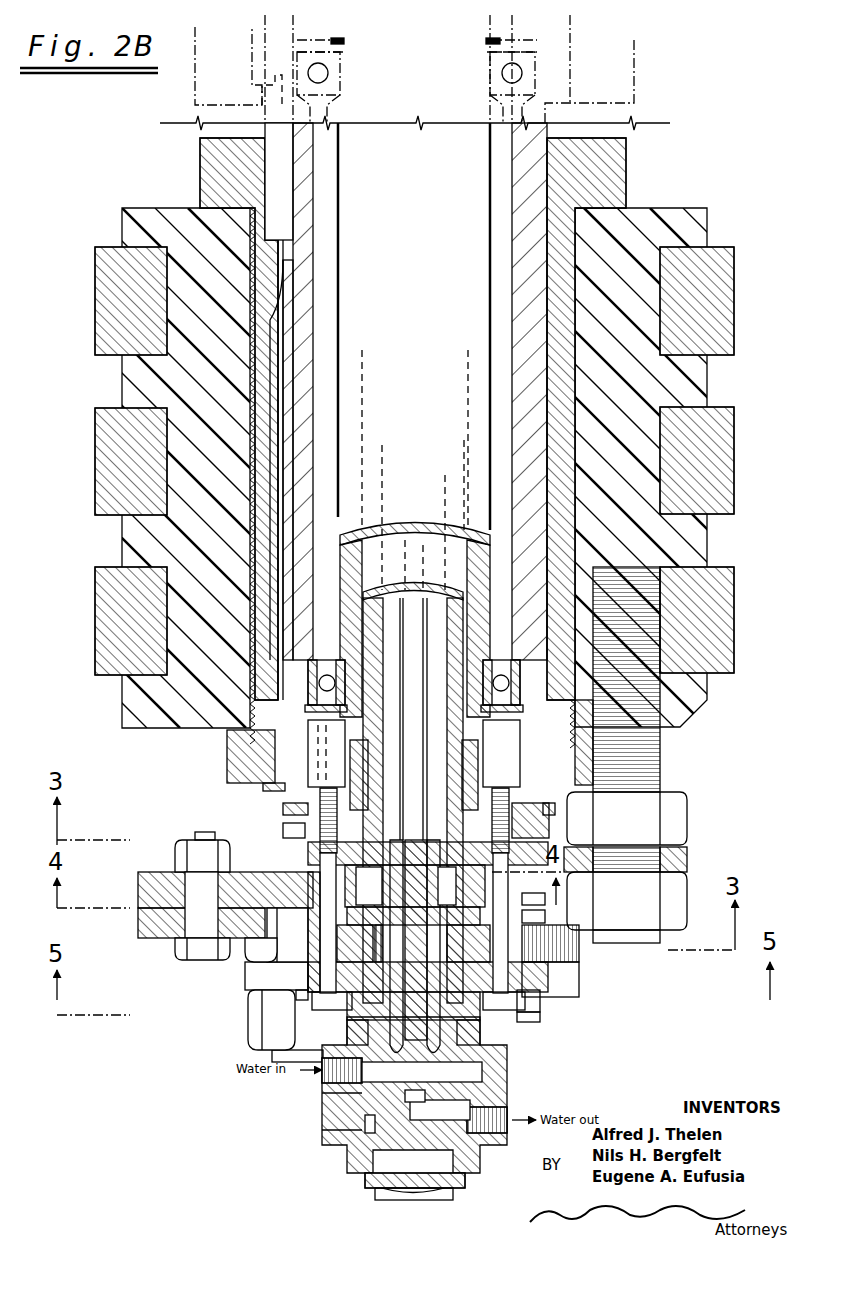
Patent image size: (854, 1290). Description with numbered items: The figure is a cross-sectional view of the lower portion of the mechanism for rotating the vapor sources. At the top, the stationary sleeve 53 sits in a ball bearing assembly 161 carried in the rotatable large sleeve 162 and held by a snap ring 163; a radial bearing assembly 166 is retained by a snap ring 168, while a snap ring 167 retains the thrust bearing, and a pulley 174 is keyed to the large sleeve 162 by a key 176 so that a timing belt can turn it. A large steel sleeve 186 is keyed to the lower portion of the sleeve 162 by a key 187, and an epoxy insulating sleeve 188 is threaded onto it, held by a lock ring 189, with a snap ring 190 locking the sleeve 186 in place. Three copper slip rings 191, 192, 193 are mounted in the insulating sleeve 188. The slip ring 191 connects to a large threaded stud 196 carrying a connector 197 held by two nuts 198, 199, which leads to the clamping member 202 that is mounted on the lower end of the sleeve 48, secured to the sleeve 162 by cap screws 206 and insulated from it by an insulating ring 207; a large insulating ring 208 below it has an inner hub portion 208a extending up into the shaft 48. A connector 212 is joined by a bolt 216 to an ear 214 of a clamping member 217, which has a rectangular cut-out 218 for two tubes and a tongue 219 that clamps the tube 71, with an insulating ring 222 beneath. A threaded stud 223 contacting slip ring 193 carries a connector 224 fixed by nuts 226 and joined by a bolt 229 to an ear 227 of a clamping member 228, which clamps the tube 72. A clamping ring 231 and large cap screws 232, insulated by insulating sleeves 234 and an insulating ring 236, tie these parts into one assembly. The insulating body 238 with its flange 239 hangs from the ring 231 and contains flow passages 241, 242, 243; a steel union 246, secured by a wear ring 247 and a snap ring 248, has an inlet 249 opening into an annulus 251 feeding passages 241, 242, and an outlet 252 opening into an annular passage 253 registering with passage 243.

The pulley 174 is at (195, 85).
The key 176 is at (274, 90).
The snap ring 167 is at (297, 50).
The radial bearing assembly 166 is at (540, 68).
The snap ring 168 is at (537, 52).
The sleeve 188 is at (122, 222).
The large sleeve 186 is at (200, 172).
The key 187 is at (282, 200).
The large sleeve 162 is at (520, 295).
The slip ring 193 is at (720, 302).
The slip ring 192 is at (722, 462).
The slip ring 191 is at (720, 615).
The stationary sleeve 53 is at (428, 365).
The sleeve 48 is at (421, 531).
The tube 72 is at (425, 660).
The tube 71 is at (400, 688).
The ball bearing assembly 161 is at (305, 688).
The snap ring 163 is at (505, 708).
The lock ring 189 is at (227, 765).
The snap ring 190 is at (270, 790).
The inner hub portion 208a is at (350, 790).
The clamping member 202 is at (478, 782).
The insulating ring 207 is at (283, 806).
The cap screws 206 is at (283, 830).
The large insulating ring 208 is at (308, 862).
The tongue 219 is at (380, 885).
The rectangular cut-out 218 is at (430, 888).
The threaded stud 223 is at (318, 848).
The large threaded stud 196 is at (640, 748).
The nut 198 is at (680, 822).
The connector 197 is at (690, 857).
The nut 199 is at (680, 905).
The clamping member 217 is at (522, 872).
The insulating sleeves 234 is at (545, 898).
The ear 227 is at (548, 958).
The connector 224 is at (245, 987).
The ear 214 is at (152, 891).
The connector 212 is at (148, 925).
The bolt 216 is at (175, 955).
The insulating ring 222 is at (287, 935).
The clamping member 228 is at (306, 975).
The nuts 226 is at (250, 955).
The clamping ring 231 is at (296, 994).
The cap screws 232 is at (322, 1010).
The flange 239 is at (347, 1028).
The body 238 is at (480, 1025).
The insulating ring 236 is at (540, 1000).
The bolt 229 is at (545, 1016).
The union 246 is at (318, 1135).
The inlet 249 is at (320, 1082).
The outlet 252 is at (508, 1125).
The annulus 251 is at (470, 1072).
The flow passage 242 is at (480, 1085).
The flow passage 241 is at (322, 1100).
The annular passage 253 is at (365, 1125).
The flow passage 243 is at (413, 1171).
The wear ring 247 is at (370, 1182).
The snap ring 248 is at (380, 1192).